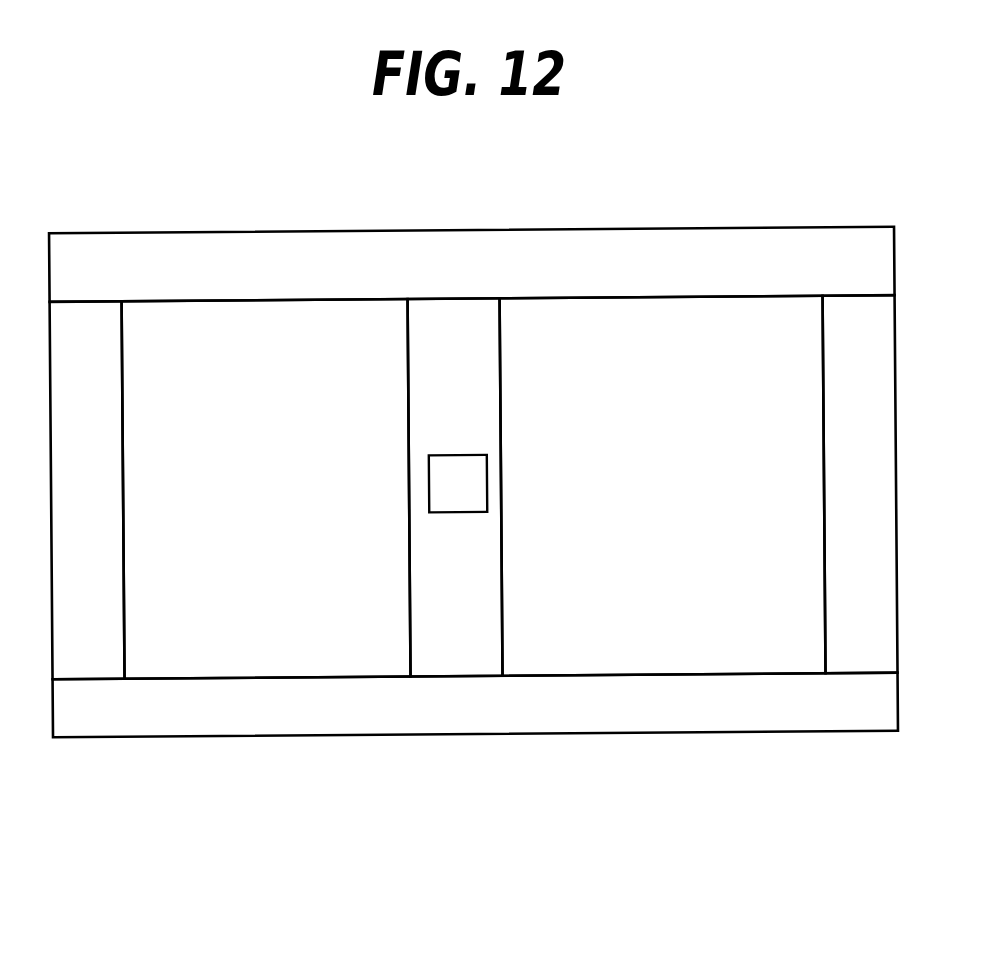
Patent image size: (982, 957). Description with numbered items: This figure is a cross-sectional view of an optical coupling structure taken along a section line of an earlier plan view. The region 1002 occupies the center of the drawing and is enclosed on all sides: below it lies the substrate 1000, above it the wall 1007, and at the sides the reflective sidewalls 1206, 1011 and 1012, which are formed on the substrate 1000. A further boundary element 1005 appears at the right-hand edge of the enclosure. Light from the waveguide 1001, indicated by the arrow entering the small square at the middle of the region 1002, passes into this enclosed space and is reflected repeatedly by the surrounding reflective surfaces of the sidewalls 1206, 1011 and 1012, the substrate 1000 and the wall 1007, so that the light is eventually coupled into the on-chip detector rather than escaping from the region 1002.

The wall 1007 is at (483, 281).
The substrate 1000 is at (489, 721).
The reflective sidewall 1206 is at (119, 486).
The right side frame portion 1005 is at (890, 486).
The region 1002 is at (489, 420).
The reflective sidewall 1011 is at (305, 499).
The reflective sidewall 1012 is at (690, 499).
The waveguide 1001 is at (453, 483).